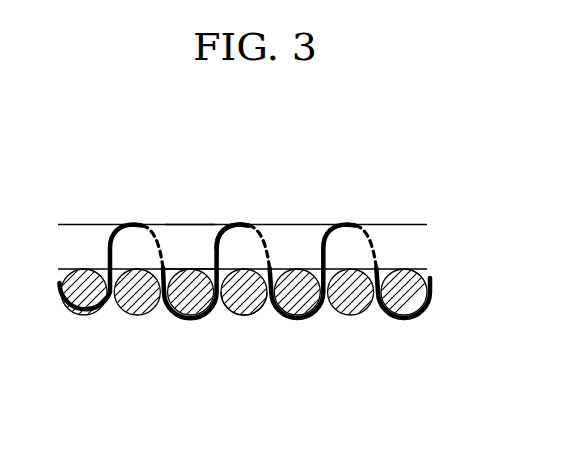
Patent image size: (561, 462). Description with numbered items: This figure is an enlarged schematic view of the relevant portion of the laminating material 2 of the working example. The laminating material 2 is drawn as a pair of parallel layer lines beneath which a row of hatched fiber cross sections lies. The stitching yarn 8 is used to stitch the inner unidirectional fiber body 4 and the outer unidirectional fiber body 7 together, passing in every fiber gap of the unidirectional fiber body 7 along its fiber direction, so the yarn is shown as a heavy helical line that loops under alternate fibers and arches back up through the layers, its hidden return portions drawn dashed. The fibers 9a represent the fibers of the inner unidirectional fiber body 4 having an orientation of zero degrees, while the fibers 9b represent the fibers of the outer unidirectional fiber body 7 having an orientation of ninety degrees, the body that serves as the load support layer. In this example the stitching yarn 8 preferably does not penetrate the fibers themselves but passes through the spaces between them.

The laminating material 2 is at (417, 210).
The inner unidirectional fiber body 4 is at (125, 312).
The outer unidirectional fiber body 7 is at (177, 243).
The stitching yarn 8 is at (325, 253).
The fibers of the unidirectional fiber body having an orientation of 0° 9a is at (238, 312).
The fibers having an orientation of 90° 9b is at (237, 247).